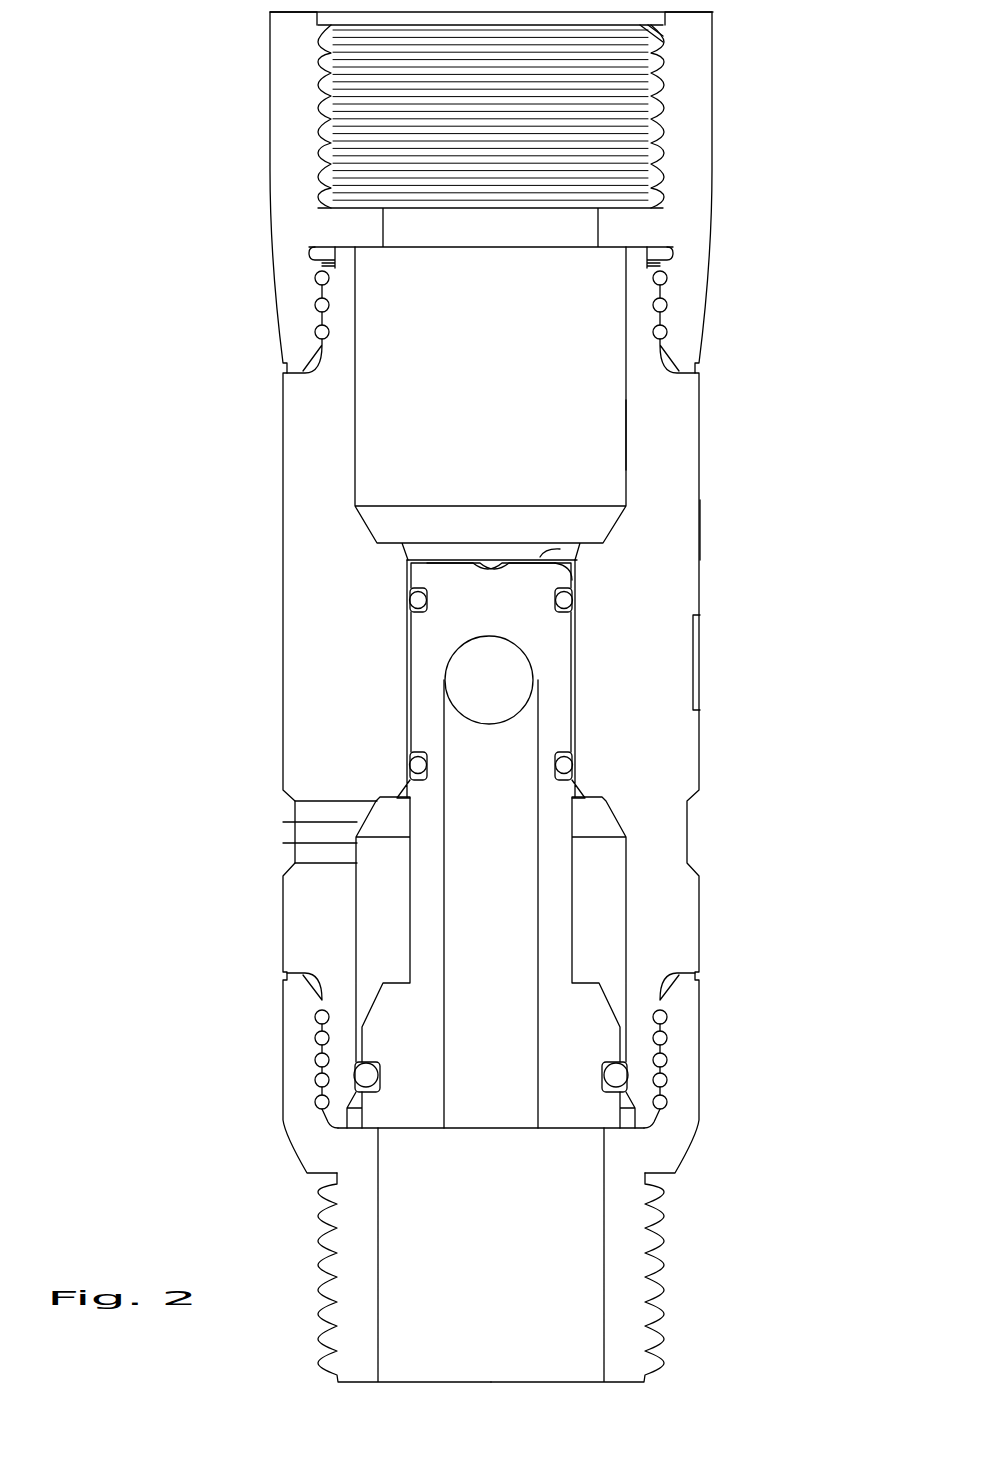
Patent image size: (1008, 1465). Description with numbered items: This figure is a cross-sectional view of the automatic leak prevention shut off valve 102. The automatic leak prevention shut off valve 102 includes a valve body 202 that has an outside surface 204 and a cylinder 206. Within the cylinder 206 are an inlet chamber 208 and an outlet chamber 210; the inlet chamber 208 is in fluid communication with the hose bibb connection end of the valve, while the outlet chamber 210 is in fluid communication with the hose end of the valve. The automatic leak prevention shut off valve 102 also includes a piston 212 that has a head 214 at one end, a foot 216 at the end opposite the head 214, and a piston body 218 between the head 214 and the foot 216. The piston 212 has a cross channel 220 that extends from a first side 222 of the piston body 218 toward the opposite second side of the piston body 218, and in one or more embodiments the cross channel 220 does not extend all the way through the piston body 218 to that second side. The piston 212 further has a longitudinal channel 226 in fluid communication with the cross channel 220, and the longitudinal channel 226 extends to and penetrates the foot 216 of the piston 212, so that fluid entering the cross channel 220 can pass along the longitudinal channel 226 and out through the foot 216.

The automatic leak prevention shut off valve 102 is at (805, 73).
The valve body 202 is at (678, 483).
The outside surface 204 is at (700, 538).
The cylinder 206 is at (627, 433).
The inlet chamber 208 is at (517, 401).
The outlet chamber 210 is at (507, 1204).
The piston 212 is at (577, 665).
The head 214 is at (560, 549).
The foot 216 is at (558, 1130).
The piston body 218 is at (560, 890).
The cross channel 220 is at (507, 690).
The first side 222 is at (507, 619).
The longitudinal channel 226 is at (507, 884).